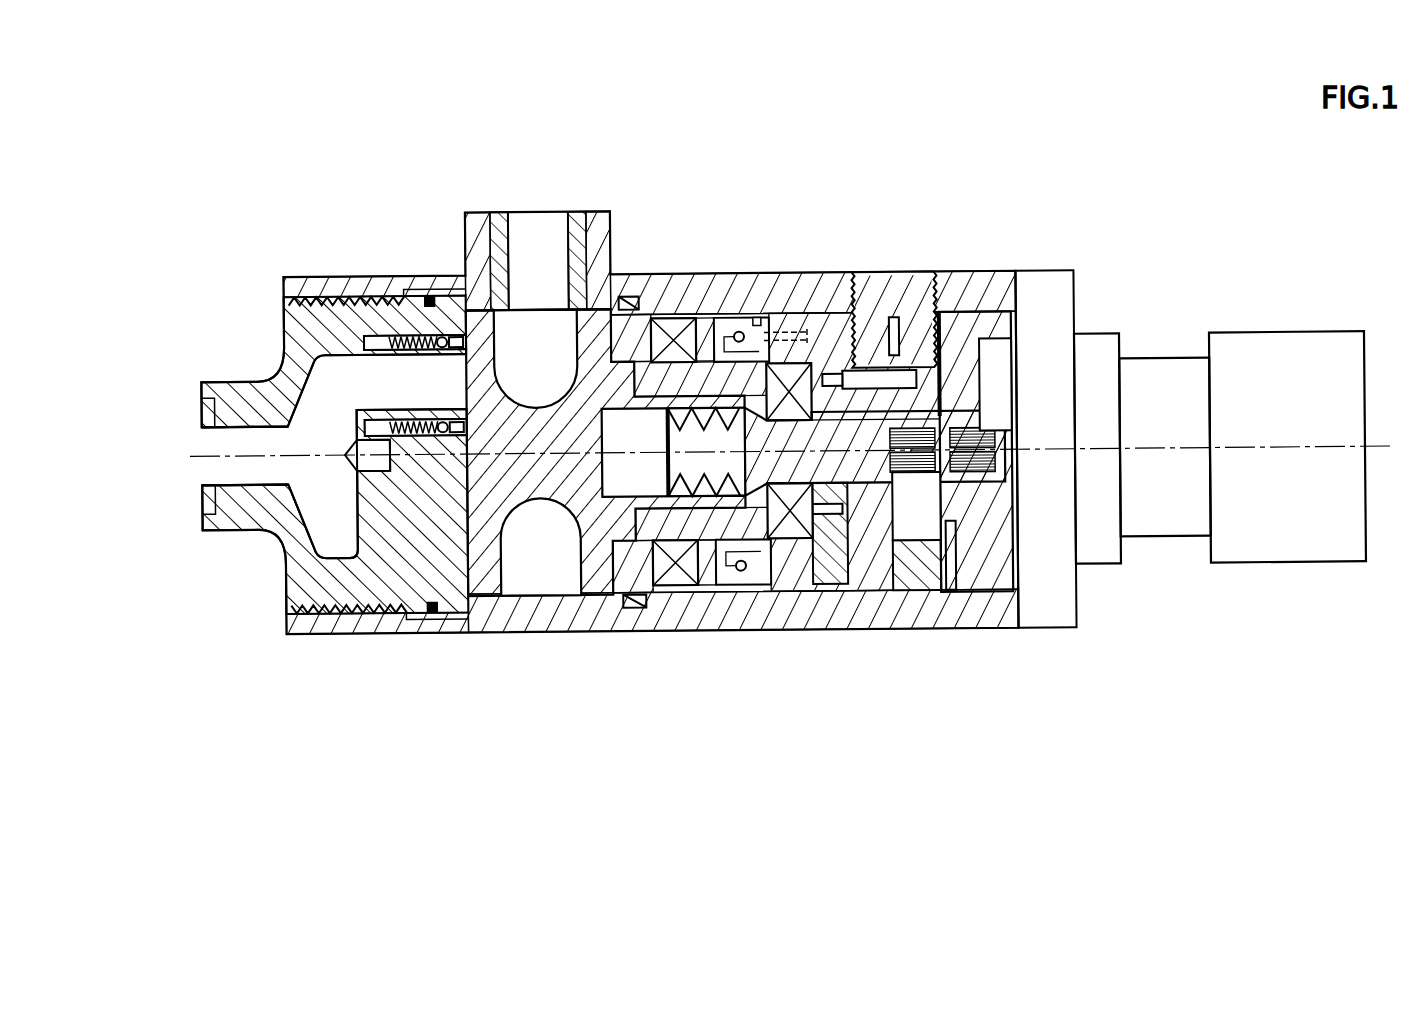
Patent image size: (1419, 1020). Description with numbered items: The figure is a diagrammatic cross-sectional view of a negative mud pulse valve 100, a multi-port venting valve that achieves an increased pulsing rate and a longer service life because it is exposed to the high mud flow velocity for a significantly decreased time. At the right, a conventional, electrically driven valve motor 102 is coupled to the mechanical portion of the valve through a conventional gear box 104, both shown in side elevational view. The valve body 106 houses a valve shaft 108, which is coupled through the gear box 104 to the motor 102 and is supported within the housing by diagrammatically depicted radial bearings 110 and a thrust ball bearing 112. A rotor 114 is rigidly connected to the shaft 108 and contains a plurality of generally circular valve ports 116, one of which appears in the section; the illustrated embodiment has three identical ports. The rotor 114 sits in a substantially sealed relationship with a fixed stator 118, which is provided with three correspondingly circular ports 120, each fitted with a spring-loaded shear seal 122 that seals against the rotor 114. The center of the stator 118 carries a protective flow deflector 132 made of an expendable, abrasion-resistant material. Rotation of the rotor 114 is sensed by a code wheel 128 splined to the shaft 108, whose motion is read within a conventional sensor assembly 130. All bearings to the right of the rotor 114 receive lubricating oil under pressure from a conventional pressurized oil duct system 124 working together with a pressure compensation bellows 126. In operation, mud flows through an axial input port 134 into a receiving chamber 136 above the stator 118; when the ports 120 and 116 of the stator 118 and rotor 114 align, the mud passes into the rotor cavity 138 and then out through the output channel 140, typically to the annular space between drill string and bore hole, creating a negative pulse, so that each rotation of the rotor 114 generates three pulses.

The negative mud pulse valve 100 is at (1133, 222).
The valve motor 102 is at (1312, 548).
The gear box 104 is at (1183, 527).
The valve body 106 is at (818, 283).
The valve shaft 108 is at (640, 310).
The radial bearings 110 is at (795, 527).
The thrust ball bearing 112 is at (758, 322).
The rotor 114 is at (485, 533).
The valve ports 116 is at (482, 340).
The stator 118 is at (320, 592).
The stator ports 120 is at (418, 362).
The shear seal 122 is at (430, 300).
The pressurized oil duct system 124 is at (880, 273).
The pressure compensation bellows 126 is at (722, 475).
The code wheel 128 is at (947, 597).
The sensor assembly 130 is at (995, 613).
The flow deflector 132 is at (348, 462).
The axial input port 134 is at (250, 410).
The receiving chamber 136 is at (328, 380).
The rotor cavity 138 is at (547, 570).
The output channel 140 is at (567, 232).